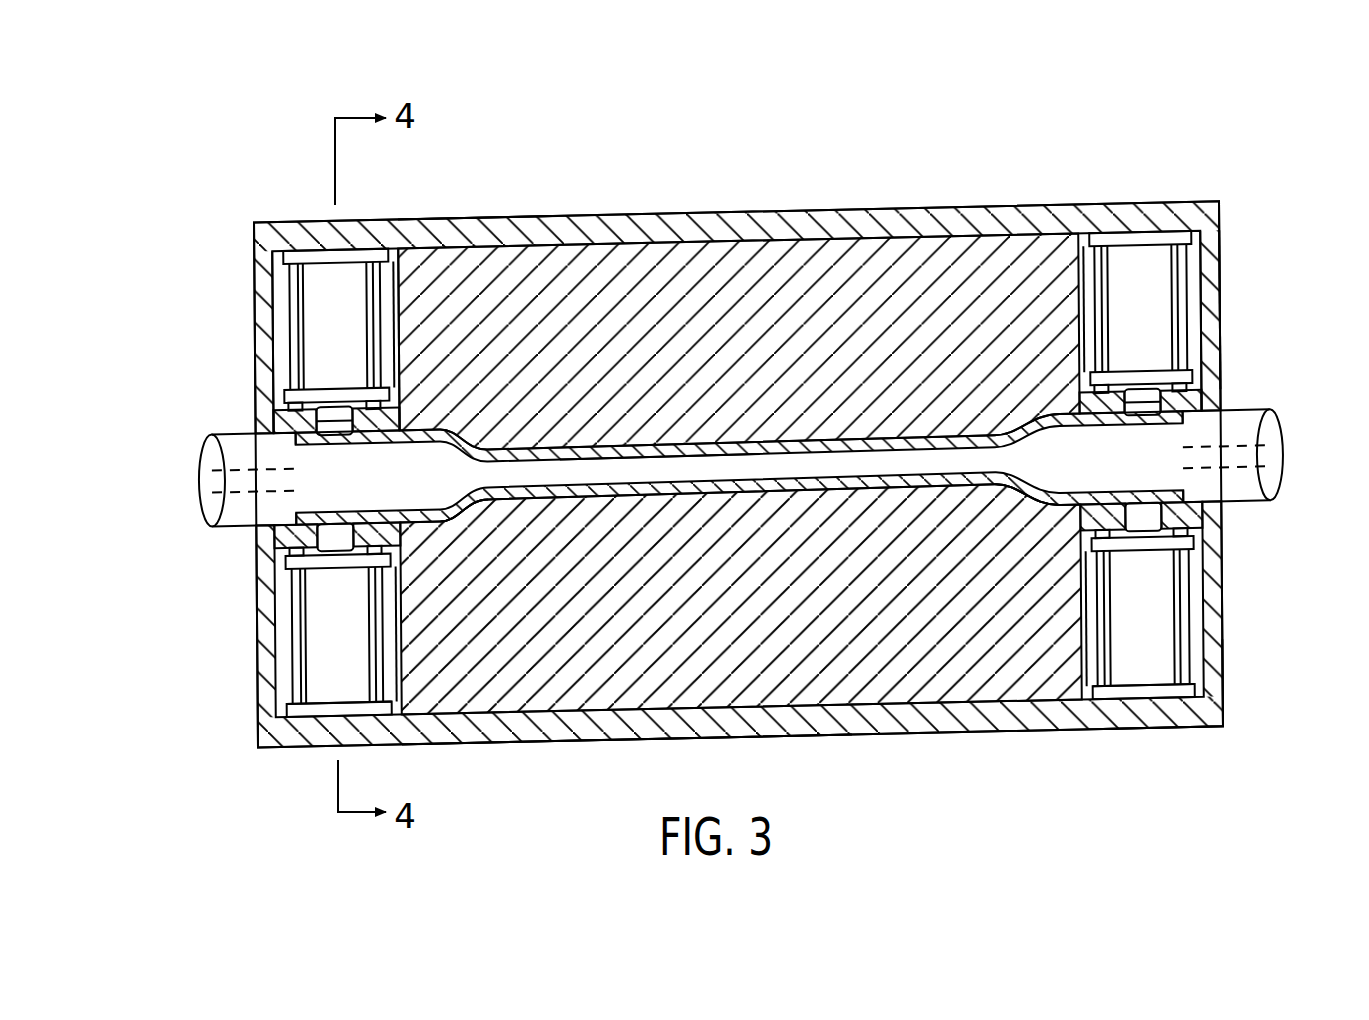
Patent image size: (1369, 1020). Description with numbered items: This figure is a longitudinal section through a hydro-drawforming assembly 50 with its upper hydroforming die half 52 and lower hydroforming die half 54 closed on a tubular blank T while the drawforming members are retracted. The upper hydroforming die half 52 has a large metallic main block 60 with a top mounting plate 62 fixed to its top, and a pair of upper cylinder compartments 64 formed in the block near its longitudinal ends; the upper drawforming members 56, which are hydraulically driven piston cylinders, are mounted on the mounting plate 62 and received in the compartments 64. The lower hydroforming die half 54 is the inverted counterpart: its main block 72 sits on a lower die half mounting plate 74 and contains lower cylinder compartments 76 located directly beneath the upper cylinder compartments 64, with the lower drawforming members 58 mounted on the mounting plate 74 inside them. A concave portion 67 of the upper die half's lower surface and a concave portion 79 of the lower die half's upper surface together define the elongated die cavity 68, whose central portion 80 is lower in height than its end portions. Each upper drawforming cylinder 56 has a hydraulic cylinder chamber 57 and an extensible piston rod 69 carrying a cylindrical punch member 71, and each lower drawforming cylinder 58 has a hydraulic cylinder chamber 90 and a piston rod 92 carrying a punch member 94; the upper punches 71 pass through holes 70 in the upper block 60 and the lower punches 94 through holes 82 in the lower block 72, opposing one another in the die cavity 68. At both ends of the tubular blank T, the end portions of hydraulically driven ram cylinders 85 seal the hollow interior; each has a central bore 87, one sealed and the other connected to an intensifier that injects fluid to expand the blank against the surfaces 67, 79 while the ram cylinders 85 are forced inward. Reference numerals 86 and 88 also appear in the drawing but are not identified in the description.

The hydro-drawforming assembly 50 is at (545, 118).
The upper hydroforming die half 52 is at (745, 204).
The lower hydroforming die half 54 is at (527, 750).
The upper drawforming members 56 is at (306, 362).
The hydraulic cylinder chamber 57 is at (316, 280).
The lower drawforming members 58 is at (306, 668).
The main block 60 is at (990, 300).
The top mounting plate 62 is at (466, 220).
The upper cylinder compartments 64 is at (278, 283).
The concave portion 67 is at (430, 430).
The die cavity 68 is at (1045, 480).
The piston rod 69 is at (355, 395).
The holes 70 is at (298, 394).
The punch members 71 is at (345, 430).
The main block 72 is at (908, 635).
The lower die half mounting plate 74 is at (769, 724).
The lower cylinder compartments 76 is at (280, 590).
The concave portion 79 is at (465, 490).
The central portion 80 is at (661, 472).
The holes 82 is at (285, 533).
The ram cylinders 85 is at (234, 447).
The housing side wall 86 is at (1215, 291).
The central bore 87 is at (218, 508).
The housing corner 88 is at (1222, 708).
The hydraulic cylinder chamber 90 is at (325, 625).
The piston rod 92 is at (1165, 516).
The punch members 94 is at (347, 538).
The tubular blank T is at (660, 442).